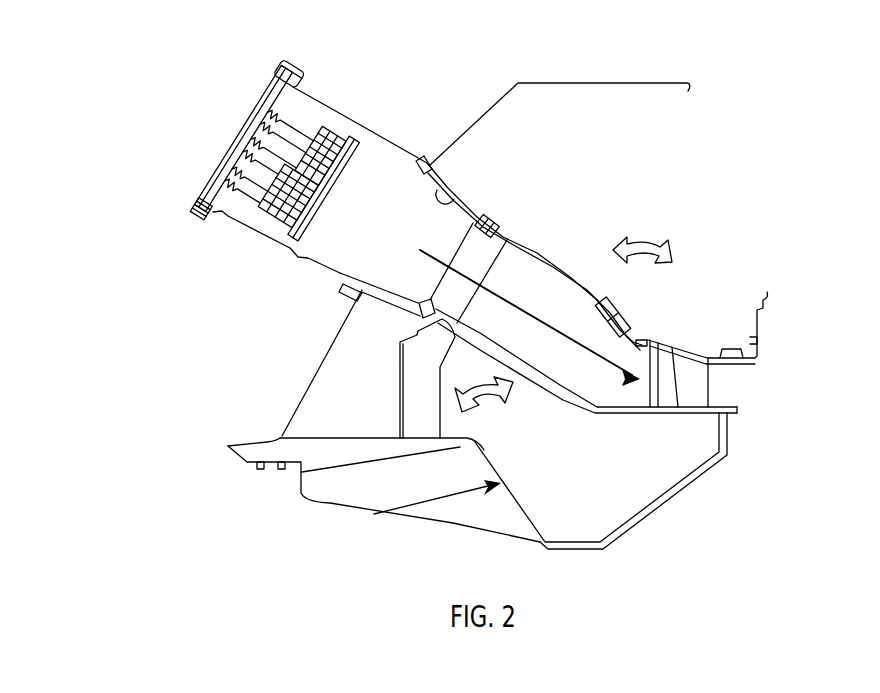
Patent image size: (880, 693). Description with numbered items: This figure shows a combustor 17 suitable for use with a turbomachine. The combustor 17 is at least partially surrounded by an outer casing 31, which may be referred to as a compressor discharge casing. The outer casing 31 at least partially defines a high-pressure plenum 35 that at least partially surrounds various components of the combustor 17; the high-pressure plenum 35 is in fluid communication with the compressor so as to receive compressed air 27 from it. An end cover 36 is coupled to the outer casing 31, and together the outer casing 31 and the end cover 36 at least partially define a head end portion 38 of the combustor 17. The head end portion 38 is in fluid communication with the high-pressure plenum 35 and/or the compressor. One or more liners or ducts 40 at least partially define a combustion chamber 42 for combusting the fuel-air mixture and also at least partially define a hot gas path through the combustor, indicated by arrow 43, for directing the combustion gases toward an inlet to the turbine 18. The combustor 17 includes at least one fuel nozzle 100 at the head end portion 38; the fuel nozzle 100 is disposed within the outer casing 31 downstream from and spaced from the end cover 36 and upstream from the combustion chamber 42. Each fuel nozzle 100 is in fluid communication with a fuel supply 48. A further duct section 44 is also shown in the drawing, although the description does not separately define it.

The combustor 17 is at (549, 40).
The turbine 18 is at (716, 389).
The compressed air 27 is at (653, 240).
The outer casing 31 is at (477, 122).
The high-pressure plenum 35 is at (615, 154).
The end cover 36 is at (195, 206).
The head end portion 38 is at (258, 222).
The liner or duct 40 is at (452, 197).
The combustion chamber 42 is at (356, 225).
The hot gas path 43 is at (522, 320).
The duct second section 44 is at (522, 277).
The fuel supply 48 is at (236, 138).
The fuel nozzle 100 is at (278, 197).